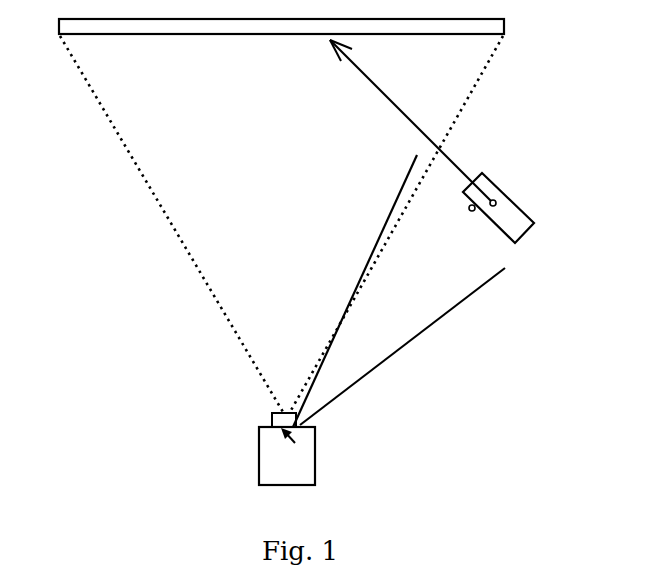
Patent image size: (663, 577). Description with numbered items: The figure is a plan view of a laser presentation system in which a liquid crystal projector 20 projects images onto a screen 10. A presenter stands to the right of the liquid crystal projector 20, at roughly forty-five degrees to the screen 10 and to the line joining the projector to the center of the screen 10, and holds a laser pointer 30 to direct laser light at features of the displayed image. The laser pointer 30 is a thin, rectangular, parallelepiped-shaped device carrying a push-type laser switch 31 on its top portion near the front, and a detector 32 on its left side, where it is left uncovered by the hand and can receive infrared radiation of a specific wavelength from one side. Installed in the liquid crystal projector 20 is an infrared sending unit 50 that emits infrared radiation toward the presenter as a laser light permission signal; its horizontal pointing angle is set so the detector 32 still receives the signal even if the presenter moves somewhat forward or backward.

The screen 10 is at (156, 35).
The liquid crystal projector 20 is at (259, 458).
The laser pointer 30 is at (530, 218).
The laser switch 31 is at (496, 200).
The detector 32 is at (472, 211).
The infrared sending unit 50 is at (295, 443).